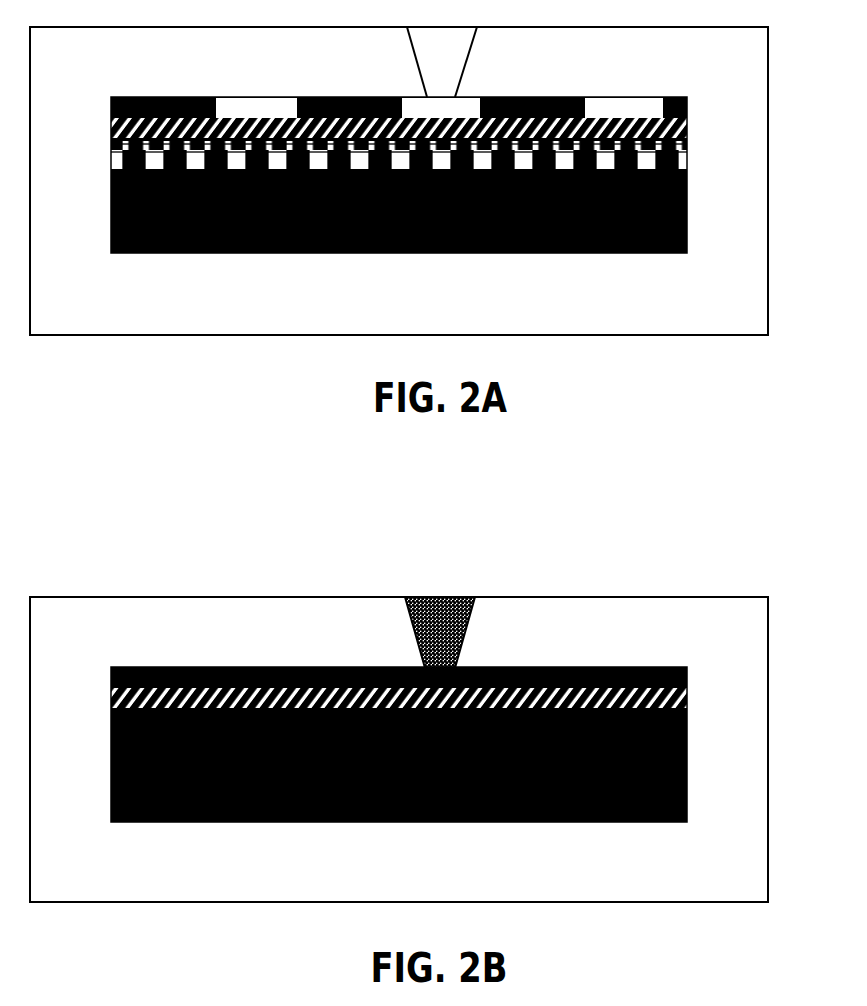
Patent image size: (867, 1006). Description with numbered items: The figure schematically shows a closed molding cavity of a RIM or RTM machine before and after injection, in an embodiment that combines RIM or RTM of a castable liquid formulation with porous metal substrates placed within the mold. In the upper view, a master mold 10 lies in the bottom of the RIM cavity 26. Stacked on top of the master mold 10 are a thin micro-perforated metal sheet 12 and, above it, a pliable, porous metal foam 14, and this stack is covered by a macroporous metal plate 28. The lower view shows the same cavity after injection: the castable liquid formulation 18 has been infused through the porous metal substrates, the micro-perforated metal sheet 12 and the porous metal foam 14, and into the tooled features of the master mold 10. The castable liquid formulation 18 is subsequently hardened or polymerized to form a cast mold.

In FIG. 2A, the master mold 10 is at (687, 205).
In FIG. 2B, the master mold 10 is at (687, 775).
In FIG. 2A, the micro-perforated metal sheet 12 is at (687, 145).
In FIG. 2B, the micro-perforated metal sheet 12 is at (687, 718).
In FIG. 2A, the porous metal foam 14 is at (687, 128).
In FIG. 2B, the porous metal foam 14 is at (687, 700).
In FIG. 2B, the castable liquid formulation 18 is at (450, 649).
In FIG. 2A, the RIM cavity 26 is at (100, 97).
In FIG. 2B, the RIM cavity 26 is at (434, 718).
In FIG. 2A, the macroporous metal plate 28 is at (687, 108).
In FIG. 2B, the macroporous metal plate 28 is at (687, 681).